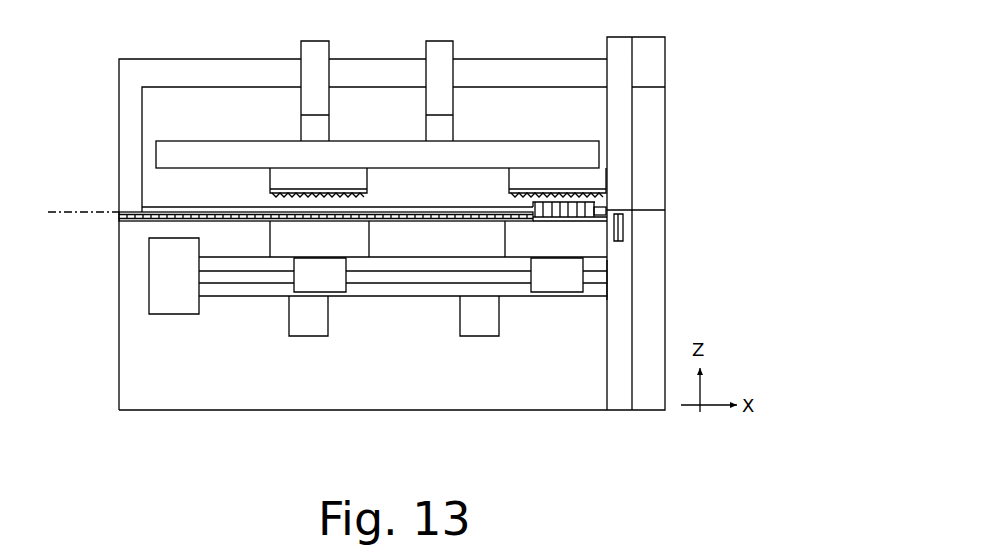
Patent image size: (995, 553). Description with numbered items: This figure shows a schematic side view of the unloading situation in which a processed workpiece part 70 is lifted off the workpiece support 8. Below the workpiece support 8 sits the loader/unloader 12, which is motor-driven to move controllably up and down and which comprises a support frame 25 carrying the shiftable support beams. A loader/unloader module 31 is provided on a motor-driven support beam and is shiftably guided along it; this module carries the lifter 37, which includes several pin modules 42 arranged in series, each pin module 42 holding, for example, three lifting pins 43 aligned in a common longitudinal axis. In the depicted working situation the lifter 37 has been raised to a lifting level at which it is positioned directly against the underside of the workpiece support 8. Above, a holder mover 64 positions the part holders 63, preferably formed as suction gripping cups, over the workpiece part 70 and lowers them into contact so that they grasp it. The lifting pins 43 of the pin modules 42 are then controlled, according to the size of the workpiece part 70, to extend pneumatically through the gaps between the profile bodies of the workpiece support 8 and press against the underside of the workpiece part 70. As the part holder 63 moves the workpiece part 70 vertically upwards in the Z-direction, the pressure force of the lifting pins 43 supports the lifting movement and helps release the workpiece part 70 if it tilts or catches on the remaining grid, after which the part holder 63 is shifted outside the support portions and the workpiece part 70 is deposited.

The workpiece support 8 is at (139, 232).
The loader/unloader 12 is at (141, 349).
The support frame 25 is at (395, 291).
The loader/unloader module 31 is at (285, 276).
The lifter 37 is at (615, 257).
The pin module 42 is at (606, 238).
The lifting pin 43 is at (608, 213).
The part holder 63 is at (262, 179).
The holder mover 64 is at (173, 131).
The workpiece part 70 is at (602, 203).